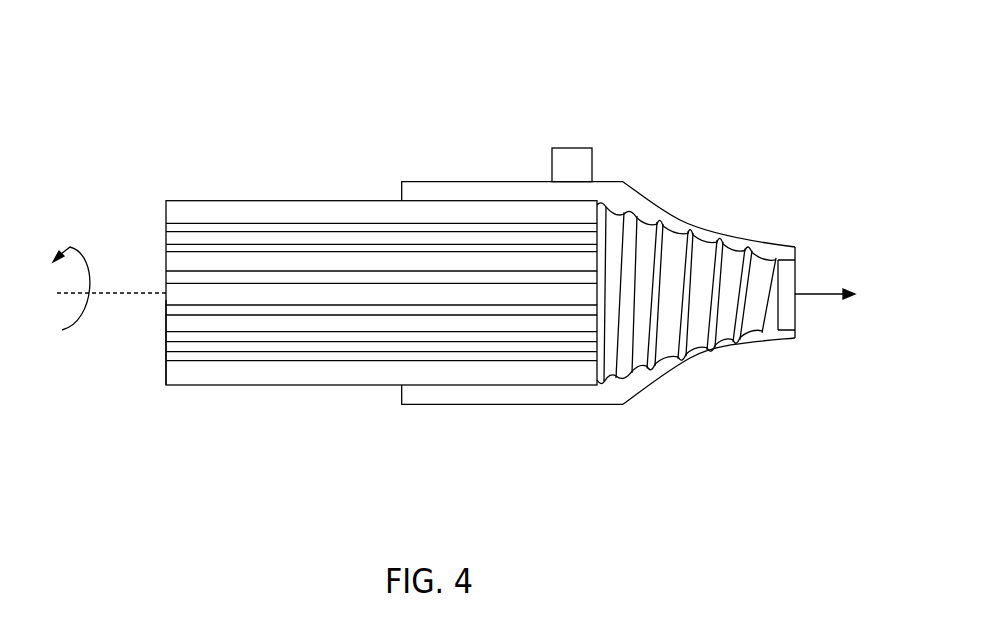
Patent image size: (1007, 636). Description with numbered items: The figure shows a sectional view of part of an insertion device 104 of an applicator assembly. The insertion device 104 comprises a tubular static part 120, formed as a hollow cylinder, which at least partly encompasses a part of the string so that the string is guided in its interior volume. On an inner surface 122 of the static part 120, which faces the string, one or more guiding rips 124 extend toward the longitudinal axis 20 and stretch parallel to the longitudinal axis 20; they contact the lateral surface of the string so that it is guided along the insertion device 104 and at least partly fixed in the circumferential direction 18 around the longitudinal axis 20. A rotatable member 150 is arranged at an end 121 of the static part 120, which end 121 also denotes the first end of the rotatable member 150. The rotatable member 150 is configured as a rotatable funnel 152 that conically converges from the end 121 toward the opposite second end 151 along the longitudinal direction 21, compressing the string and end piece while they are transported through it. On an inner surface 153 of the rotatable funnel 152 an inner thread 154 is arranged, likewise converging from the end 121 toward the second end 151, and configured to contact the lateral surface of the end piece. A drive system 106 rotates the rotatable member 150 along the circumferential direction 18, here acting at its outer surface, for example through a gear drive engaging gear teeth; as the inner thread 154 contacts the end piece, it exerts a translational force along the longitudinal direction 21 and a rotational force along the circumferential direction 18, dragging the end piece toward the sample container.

The circumferential direction 18 is at (63, 335).
The longitudinal axis 20 is at (127, 292).
The longitudinal direction 21 is at (822, 290).
The insertion device 104 is at (670, 70).
The drive system 106 is at (571, 136).
The static part 120 is at (334, 229).
The end of static part 121 is at (582, 422).
The inner surface 122 is at (166, 322).
The guiding rips 124 is at (213, 262).
The rotatable member 150 is at (623, 277).
The second end of rotatable member 151 is at (818, 351).
The rotatable funnel 152 is at (702, 378).
The inner surface of rotatable funnel 153 is at (650, 385).
The inner thread 154 is at (620, 200).